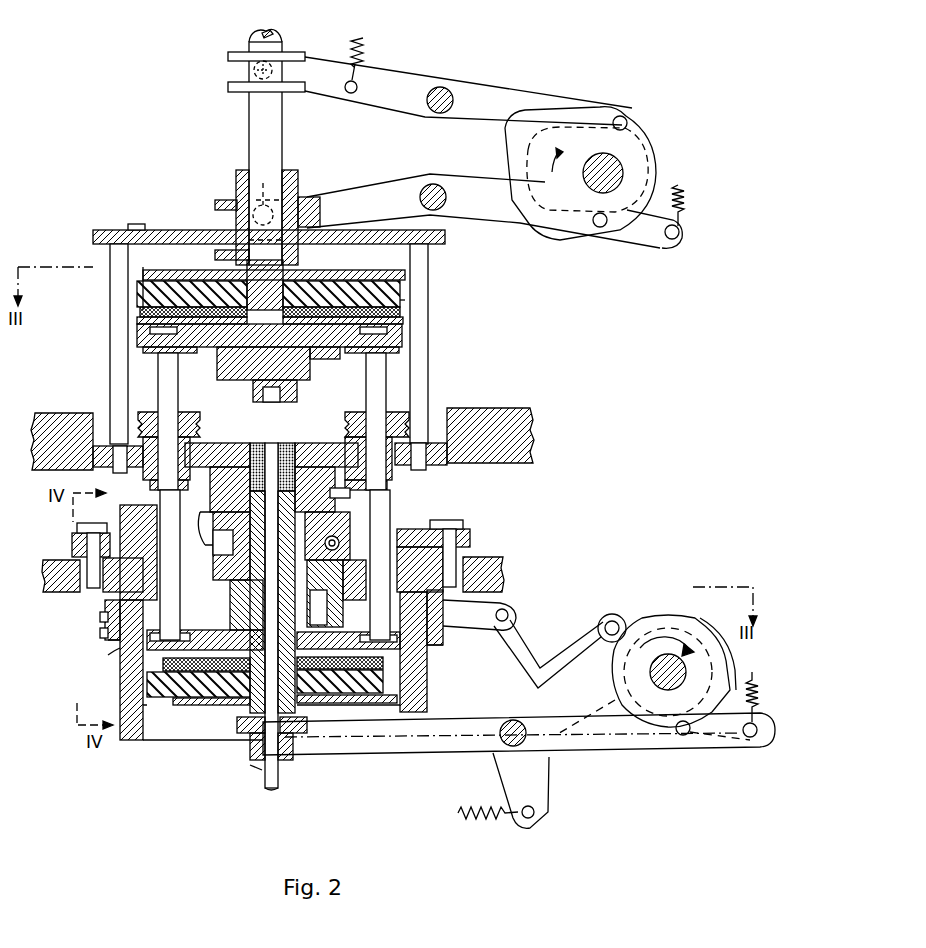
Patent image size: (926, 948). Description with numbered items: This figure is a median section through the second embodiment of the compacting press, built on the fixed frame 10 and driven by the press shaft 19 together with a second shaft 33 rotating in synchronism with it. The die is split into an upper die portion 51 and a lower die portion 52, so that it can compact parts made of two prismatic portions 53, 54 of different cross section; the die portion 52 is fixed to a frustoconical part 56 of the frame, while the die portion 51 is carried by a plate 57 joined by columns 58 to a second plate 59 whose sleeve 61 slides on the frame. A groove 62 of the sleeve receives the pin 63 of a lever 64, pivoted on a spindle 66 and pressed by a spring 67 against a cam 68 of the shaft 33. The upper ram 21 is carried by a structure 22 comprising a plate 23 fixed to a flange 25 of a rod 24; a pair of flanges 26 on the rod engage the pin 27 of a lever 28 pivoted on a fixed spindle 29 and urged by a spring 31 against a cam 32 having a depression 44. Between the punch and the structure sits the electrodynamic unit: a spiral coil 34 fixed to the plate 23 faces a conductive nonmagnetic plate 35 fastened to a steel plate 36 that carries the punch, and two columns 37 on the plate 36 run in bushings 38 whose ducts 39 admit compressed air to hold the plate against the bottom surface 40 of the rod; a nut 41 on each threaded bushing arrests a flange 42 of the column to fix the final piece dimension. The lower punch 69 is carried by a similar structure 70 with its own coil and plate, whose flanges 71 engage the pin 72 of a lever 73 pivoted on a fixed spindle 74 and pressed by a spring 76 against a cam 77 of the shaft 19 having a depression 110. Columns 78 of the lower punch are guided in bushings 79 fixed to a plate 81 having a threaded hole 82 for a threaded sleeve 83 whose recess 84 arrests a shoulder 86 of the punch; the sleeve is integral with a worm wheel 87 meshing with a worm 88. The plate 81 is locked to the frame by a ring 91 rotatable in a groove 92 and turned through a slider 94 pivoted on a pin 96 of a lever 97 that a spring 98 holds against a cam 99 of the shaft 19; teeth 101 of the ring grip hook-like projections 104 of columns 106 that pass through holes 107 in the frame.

The fixed frame 10 is at (292, 170).
The shaft 19 is at (668, 690).
The ram 21 is at (258, 375).
The structure 22 is at (186, 256).
The plate 23 is at (335, 281).
The rod 24 is at (249, 113).
The flange 25 is at (398, 272).
The flanges 26 is at (229, 86).
The pin 27 is at (249, 44).
The lever 28 is at (412, 78).
The fixed spindle 29 is at (452, 92).
The spring 31 is at (366, 41).
The cam 32 is at (638, 143).
The second shaft 33 is at (615, 168).
The coil 34 is at (400, 302).
The plate of nonmagnetic conductive material 35 is at (150, 311).
The steel plate 36 is at (337, 352).
The columns 37 is at (160, 365).
The bushings 38 is at (150, 445).
The duct 39 is at (160, 486).
The bottom surface 40 is at (230, 352).
The nut 41 is at (143, 410).
The flange 42 is at (143, 350).
The depression 44 is at (507, 170).
The die portion 51 is at (308, 446).
The die portion 52 is at (218, 465).
The prismatic portion of part 53 is at (258, 440).
The prismatic portion of part 54 is at (286, 441).
The frustoconical part 56 is at (230, 514).
The plate 57 is at (440, 445).
The columns 58 is at (110, 255).
The second plate 59 is at (143, 228).
The sleeve 61 is at (234, 200).
The groove 62 is at (312, 200).
The pin 63 is at (265, 200).
The lever 64 is at (388, 188).
The spindle 66 is at (433, 184).
The spring 67 is at (678, 185).
The cam 68 is at (556, 208).
The lower punch 69 is at (342, 490).
The structure 70 is at (188, 718).
The flanges 71 is at (303, 745).
The pin 72 is at (256, 770).
The lever 73 is at (460, 750).
The fixed spindle 74 is at (514, 722).
The spring 76 is at (748, 684).
The cam 77 is at (655, 613).
The columns 78 is at (175, 595).
The bushings 79 is at (146, 528).
The plate 81 is at (108, 523).
The threaded hole 82 is at (202, 540).
The externally threaded sleeve 83 is at (332, 537).
The recess 84 is at (235, 625).
The shoulder 86 is at (314, 622).
The worm wheel 87 is at (345, 628).
The worm 88 is at (445, 524).
The ring 91 is at (145, 655).
The groove 92 is at (412, 650).
The slider 94 is at (490, 605).
The pin 96 is at (509, 613).
The lever 97 is at (515, 655).
The spring 98 is at (456, 813).
The cam 99 is at (617, 698).
The teeth 101 is at (105, 616).
The hook-like projection 104 is at (112, 630).
The column 106 is at (80, 548).
The hole 107 is at (108, 602).
The depression 110 is at (714, 632).